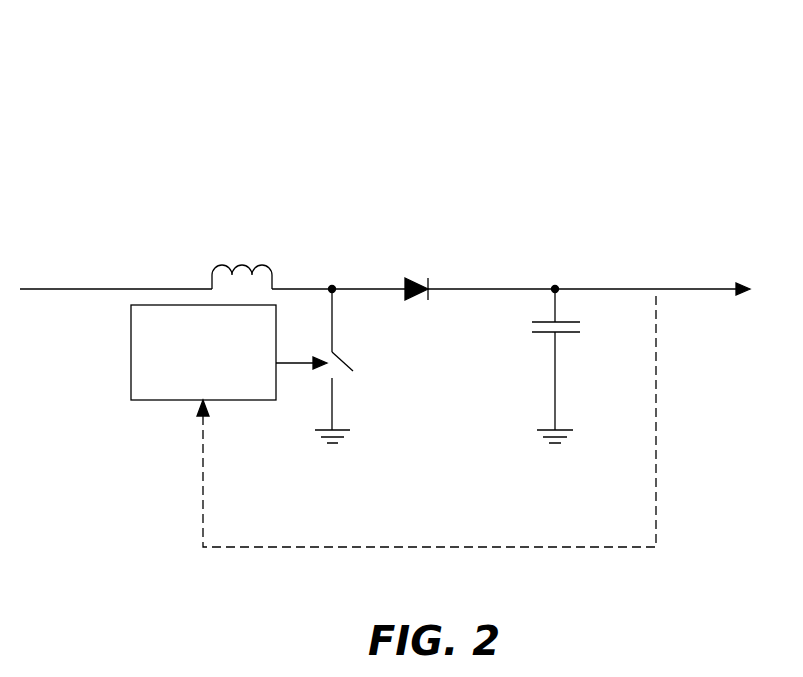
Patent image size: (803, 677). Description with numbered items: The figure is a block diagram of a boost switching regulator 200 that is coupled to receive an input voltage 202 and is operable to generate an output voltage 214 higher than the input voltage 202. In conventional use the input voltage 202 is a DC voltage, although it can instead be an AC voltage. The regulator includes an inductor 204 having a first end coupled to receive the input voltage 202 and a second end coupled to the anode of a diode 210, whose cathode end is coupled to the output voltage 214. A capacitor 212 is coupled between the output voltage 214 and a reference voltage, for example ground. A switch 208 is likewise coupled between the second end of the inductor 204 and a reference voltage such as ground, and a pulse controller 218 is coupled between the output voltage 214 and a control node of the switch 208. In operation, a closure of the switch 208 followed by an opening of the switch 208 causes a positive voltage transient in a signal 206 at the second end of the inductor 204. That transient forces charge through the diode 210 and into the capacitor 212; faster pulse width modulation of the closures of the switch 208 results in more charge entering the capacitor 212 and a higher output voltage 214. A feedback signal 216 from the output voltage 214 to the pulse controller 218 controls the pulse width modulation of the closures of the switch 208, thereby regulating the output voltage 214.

The boost switching regulator 200 is at (535, 120).
The input voltage 202 is at (180, 288).
The inductor 204 is at (234, 265).
The signal 206 is at (304, 288).
The switch 208 is at (340, 375).
The diode 210 is at (410, 280).
The capacitor 212 is at (534, 334).
The output voltage 214 is at (648, 287).
The feedback signal 216 is at (392, 547).
The pulse controller 218 is at (185, 392).